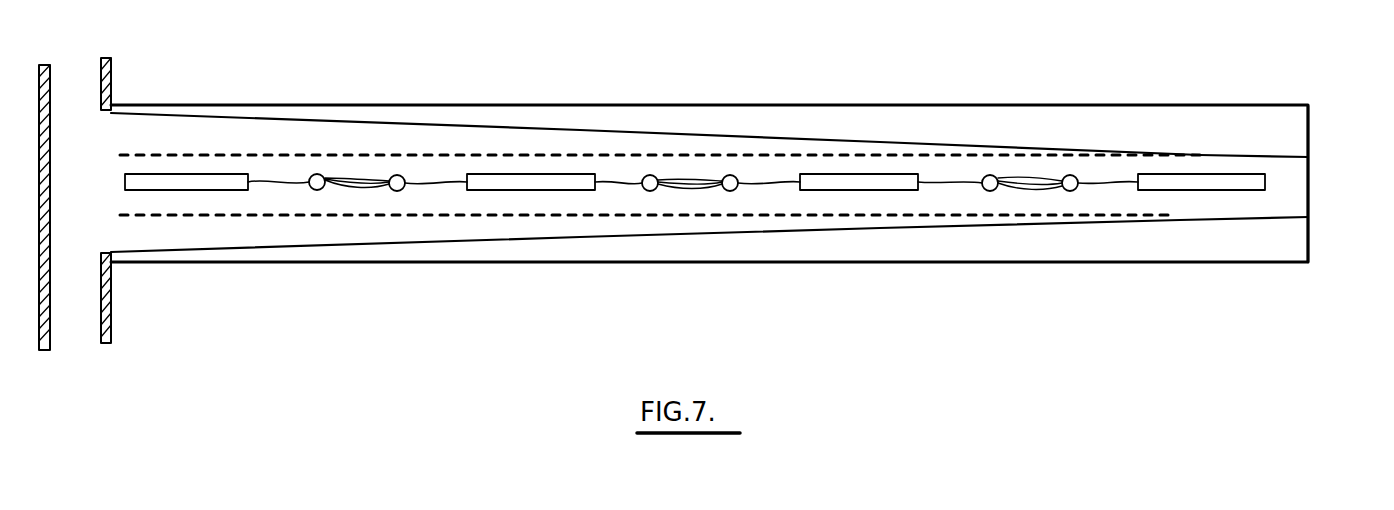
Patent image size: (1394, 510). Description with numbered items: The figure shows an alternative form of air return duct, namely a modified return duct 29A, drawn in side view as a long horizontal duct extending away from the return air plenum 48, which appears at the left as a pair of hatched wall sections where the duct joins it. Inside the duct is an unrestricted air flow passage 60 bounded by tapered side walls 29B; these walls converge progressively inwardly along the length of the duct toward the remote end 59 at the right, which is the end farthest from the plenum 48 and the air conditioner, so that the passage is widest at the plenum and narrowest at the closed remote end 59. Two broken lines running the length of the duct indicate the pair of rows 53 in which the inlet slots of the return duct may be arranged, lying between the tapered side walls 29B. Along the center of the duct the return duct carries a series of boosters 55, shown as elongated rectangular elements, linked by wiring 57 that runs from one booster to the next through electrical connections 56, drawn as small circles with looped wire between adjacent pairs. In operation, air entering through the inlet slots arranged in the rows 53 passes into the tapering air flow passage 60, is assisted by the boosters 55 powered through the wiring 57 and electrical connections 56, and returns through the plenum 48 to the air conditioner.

The return air plenum 48 is at (73, 225).
The modified return duct 29A is at (975, 92).
The tapered side walls 29B is at (1018, 150).
The rows 53 is at (428, 155).
The boosters 55 is at (200, 180).
The electrical connections 56 is at (397, 190).
The wiring 57 is at (361, 190).
The remote end 59 is at (1315, 177).
The unrestricted air flow passage 60 is at (214, 136).